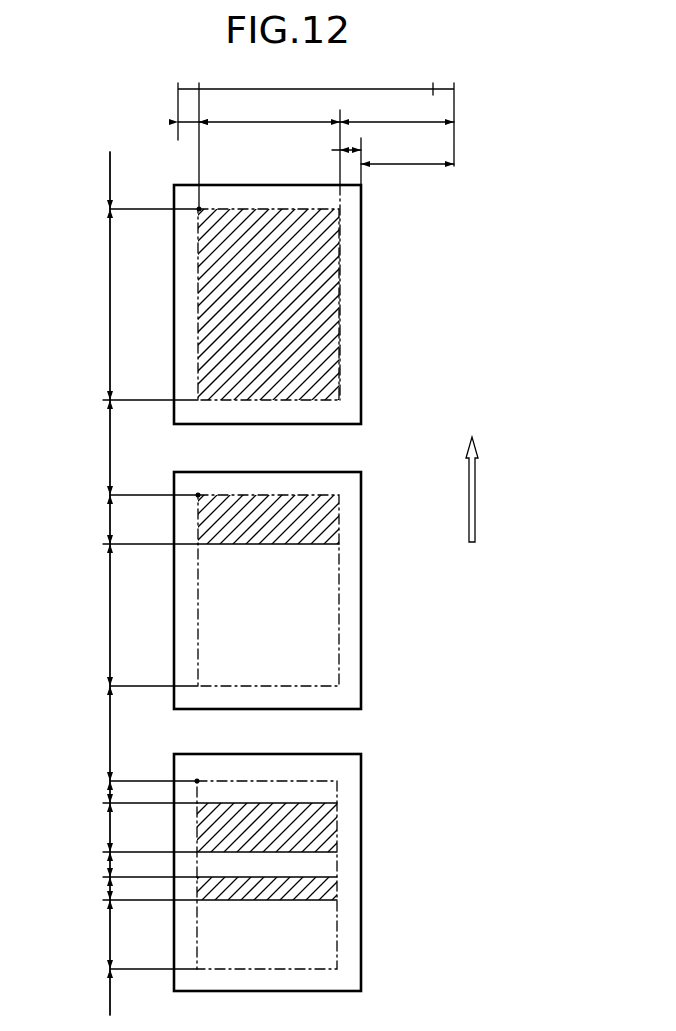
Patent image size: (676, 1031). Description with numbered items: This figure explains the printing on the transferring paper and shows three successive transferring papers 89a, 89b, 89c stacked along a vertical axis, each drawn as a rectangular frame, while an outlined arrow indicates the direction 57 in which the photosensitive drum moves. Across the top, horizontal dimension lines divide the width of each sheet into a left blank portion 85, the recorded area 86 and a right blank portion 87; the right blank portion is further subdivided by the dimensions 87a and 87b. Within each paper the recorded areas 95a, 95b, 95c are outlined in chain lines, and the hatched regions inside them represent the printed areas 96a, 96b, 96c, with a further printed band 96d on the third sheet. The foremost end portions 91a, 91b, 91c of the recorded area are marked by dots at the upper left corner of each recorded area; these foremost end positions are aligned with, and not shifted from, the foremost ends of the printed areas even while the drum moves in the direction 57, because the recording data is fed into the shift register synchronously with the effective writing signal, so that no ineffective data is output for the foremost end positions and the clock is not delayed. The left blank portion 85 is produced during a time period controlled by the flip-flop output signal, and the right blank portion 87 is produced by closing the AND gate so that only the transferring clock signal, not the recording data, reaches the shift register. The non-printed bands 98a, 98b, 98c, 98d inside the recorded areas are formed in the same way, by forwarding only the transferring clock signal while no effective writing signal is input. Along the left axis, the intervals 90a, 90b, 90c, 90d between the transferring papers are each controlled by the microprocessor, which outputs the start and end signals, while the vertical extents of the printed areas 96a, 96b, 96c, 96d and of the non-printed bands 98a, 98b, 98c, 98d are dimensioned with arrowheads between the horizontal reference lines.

The direction 57 is at (478, 482).
The left blank portion 85 is at (176, 120).
The recorded area 86 is at (268, 121).
The right blank portion 87 is at (393, 124).
The frame width 87a is at (361, 150).
The outer margin width 87b is at (410, 167).
The transferring paper 89a is at (361, 367).
The transferring paper 89b is at (361, 612).
The transferring paper 89c is at (361, 875).
The interval 90a is at (108, 165).
The interval 90b is at (102, 446).
The interval 90c is at (102, 730).
The interval 90d is at (108, 1006).
The foremost end portion 91a is at (199, 209).
The foremost end portion 91b is at (198, 495).
The foremost end portion 91c is at (197, 781).
The recorded area 95a is at (339, 310).
The recorded area 95b is at (339, 573).
The recorded area 95c is at (337, 865).
The printed area 96a is at (108, 338).
The printed area 96b is at (106, 524).
The printed area 96c is at (108, 836).
The fourth printed length 96d is at (108, 891).
The first blank length 98a is at (108, 618).
The second blank length 98b is at (104, 798).
The third blank length 98c is at (108, 878).
The fourth blank length 98d is at (108, 935).